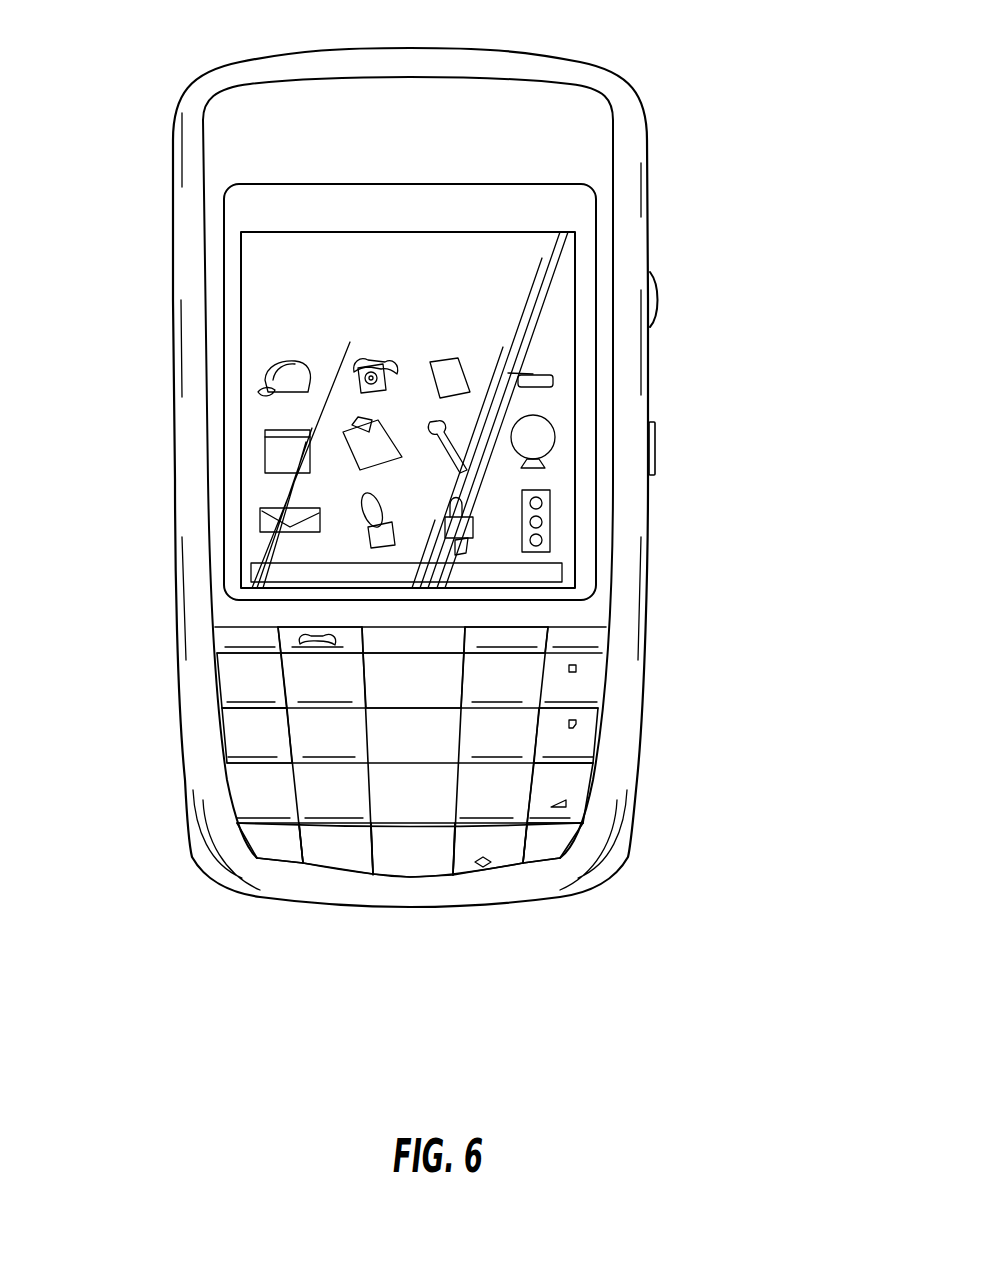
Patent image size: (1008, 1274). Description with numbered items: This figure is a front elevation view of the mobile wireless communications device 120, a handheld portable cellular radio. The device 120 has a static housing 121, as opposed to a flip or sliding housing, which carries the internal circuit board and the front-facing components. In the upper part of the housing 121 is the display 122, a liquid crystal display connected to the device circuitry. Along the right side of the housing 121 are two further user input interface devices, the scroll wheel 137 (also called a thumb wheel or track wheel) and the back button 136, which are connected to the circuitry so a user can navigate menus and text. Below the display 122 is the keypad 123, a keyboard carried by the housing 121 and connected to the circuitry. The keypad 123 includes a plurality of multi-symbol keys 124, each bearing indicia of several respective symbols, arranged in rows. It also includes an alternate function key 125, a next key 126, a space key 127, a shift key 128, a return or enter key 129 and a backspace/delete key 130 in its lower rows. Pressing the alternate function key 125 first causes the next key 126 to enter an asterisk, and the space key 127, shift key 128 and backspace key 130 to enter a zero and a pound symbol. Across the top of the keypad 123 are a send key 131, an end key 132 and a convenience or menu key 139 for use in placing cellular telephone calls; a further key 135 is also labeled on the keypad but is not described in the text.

The mobile wireless communications device 120 is at (705, 50).
The housing 121 is at (223, 85).
The display 122 is at (255, 330).
The keypad 123 is at (618, 678).
The multi-symbol keys 124 is at (237, 733).
The alternate function key 125 is at (252, 846).
The next key 126 is at (322, 863).
The space key 127 is at (402, 877).
The shift key 128 is at (505, 862).
The return (or enter) key 129 is at (571, 838).
The backspace/delete key 130 is at (586, 787).
The send key 131 is at (288, 637).
The end key 132 is at (528, 633).
The key 135 is at (593, 733).
The back button 136 is at (655, 450).
The scroll wheel 137 is at (658, 300).
The convenience (menu) key 139 is at (424, 661).